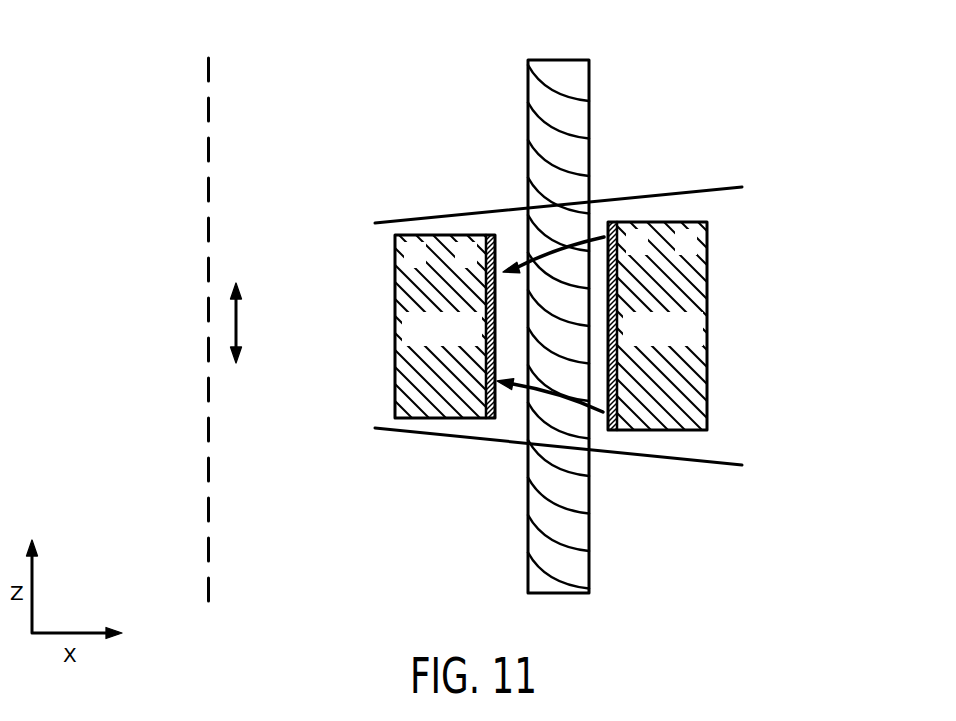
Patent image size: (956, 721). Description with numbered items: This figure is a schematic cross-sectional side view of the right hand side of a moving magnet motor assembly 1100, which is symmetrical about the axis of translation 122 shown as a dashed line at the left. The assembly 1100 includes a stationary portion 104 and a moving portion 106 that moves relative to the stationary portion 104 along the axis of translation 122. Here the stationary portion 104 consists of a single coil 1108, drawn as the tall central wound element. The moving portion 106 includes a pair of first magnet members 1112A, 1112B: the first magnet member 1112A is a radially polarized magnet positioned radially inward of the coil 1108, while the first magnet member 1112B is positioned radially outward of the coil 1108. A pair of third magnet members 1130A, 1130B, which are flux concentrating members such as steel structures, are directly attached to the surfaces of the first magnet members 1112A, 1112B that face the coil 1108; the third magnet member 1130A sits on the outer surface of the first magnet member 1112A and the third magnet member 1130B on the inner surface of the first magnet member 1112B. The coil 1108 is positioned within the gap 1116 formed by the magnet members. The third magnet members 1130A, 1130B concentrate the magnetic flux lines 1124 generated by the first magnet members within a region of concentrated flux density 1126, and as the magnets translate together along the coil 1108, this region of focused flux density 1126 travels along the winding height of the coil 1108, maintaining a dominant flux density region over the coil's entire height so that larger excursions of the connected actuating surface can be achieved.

The assembly 1100 is at (775, 80).
The stationary portion 104 is at (617, 80).
The moving portion 106 is at (738, 260).
The coil 1108 is at (560, 60).
The first magnet member 1112A is at (405, 235).
The first magnet member 1112B is at (684, 222).
The third magnet member 1130A is at (487, 235).
The third magnet member 1130B is at (610, 222).
The magnetic flux lines 1124 is at (525, 265).
The gap 1116 is at (597, 422).
The region of concentrated flux density 1126 is at (694, 464).
The axis of translation 122 is at (210, 108).